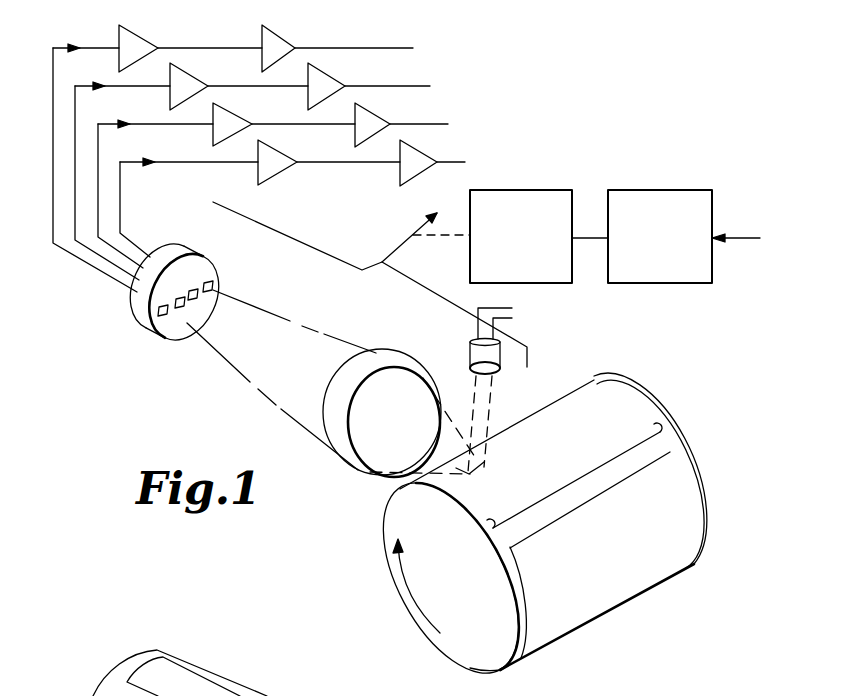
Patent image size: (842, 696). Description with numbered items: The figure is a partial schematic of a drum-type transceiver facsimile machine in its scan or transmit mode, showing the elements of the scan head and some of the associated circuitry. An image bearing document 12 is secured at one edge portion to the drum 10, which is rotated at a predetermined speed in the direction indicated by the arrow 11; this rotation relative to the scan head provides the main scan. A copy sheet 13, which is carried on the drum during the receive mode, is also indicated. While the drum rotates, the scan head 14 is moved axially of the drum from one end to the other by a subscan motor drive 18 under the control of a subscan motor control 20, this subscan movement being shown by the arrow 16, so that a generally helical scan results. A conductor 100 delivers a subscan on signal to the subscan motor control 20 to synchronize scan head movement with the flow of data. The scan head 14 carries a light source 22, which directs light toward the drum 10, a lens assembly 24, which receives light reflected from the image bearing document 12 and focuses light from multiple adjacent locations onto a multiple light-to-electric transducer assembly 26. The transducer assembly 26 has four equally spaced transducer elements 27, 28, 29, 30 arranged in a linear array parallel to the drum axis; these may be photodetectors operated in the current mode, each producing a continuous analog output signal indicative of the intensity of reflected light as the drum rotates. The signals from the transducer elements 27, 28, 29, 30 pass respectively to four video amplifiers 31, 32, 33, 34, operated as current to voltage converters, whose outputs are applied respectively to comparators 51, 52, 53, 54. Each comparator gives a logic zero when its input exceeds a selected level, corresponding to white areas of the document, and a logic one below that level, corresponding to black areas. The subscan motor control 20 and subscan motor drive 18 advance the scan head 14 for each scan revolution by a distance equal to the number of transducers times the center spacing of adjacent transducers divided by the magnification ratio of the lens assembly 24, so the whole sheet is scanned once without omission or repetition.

The drum 10 is at (492, 660).
The arrow 11 is at (410, 592).
The image bearing document 12 is at (575, 617).
The copy sheet 13 is at (289, 695).
The scan head 14 is at (339, 258).
The arrow 16 is at (414, 222).
The subscan motor drive 18 is at (541, 188).
The subscan motor control 20 is at (655, 188).
The light source 22 is at (470, 348).
The lens assembly 24 is at (389, 360).
The multiple light-to-electric transducer assembly 26 is at (187, 252).
The transducer element 27 is at (163, 318).
The transducer element 28 is at (180, 313).
The transducer element 29 is at (197, 287).
The transducer element 30 is at (214, 289).
The video amplifier 31 is at (141, 37).
The video amplifier 32 is at (197, 79).
The video amplifier 33 is at (243, 120).
The video amplifier 34 is at (290, 157).
The comparator 51 is at (282, 39).
The comparator 52 is at (336, 80).
The comparator 53 is at (378, 118).
The comparator 54 is at (428, 158).
The conductor 100 is at (742, 238).